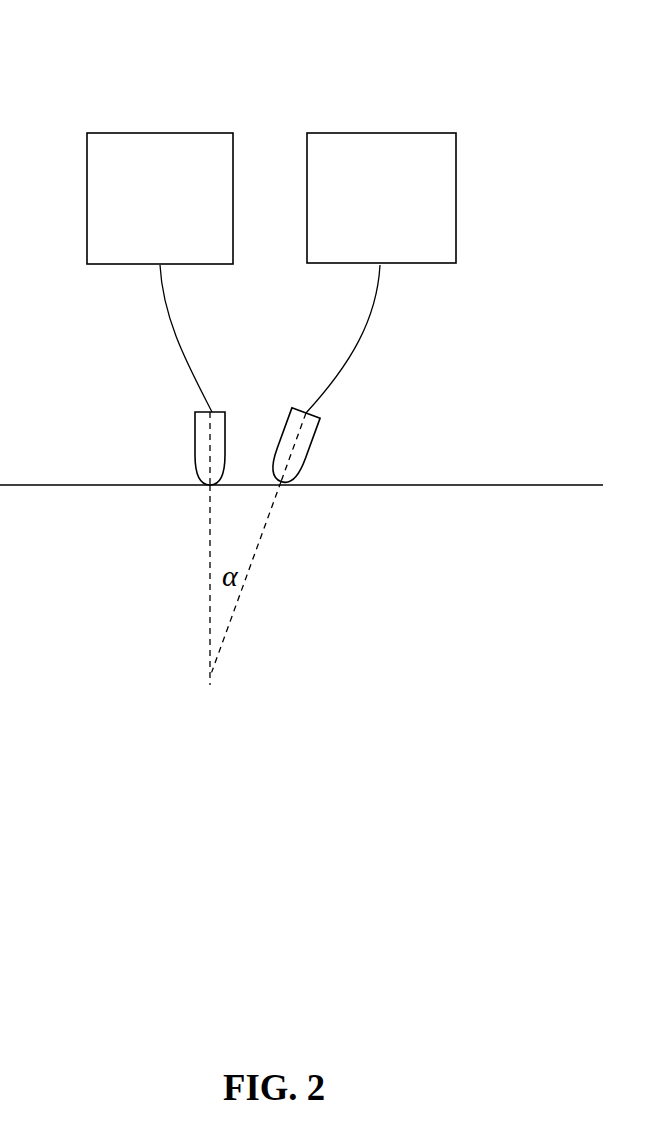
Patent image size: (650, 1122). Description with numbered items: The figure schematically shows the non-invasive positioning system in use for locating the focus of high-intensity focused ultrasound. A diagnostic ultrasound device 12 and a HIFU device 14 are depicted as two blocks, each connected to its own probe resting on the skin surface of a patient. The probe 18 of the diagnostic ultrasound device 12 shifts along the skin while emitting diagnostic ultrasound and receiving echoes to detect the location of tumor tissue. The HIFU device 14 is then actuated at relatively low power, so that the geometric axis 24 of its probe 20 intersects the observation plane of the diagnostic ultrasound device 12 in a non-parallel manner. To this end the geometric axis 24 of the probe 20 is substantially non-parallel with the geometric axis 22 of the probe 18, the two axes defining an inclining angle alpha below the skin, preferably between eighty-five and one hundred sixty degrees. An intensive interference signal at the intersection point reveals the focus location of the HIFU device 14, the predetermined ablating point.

The diagnostic ultrasound device 12 is at (160, 133).
The HIFU device 14 is at (378, 133).
The probe 18 is at (195, 428).
The probe 20 is at (318, 430).
The geometric axis 22 is at (208, 578).
The geometric axis 24 is at (252, 562).